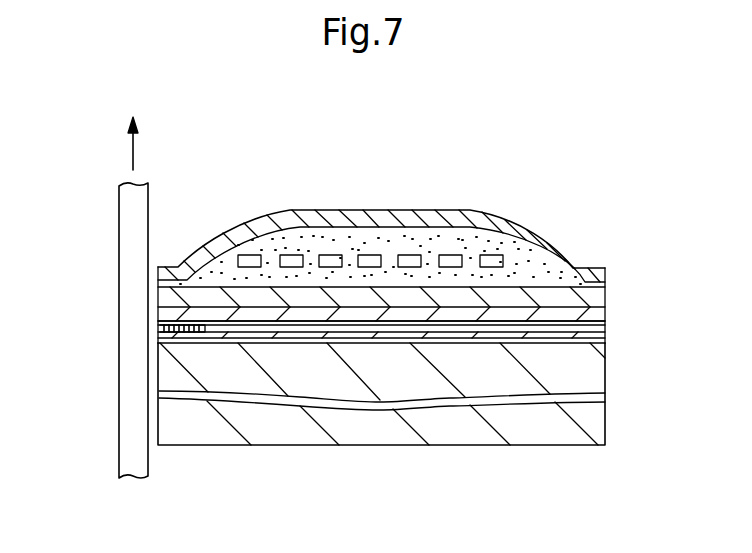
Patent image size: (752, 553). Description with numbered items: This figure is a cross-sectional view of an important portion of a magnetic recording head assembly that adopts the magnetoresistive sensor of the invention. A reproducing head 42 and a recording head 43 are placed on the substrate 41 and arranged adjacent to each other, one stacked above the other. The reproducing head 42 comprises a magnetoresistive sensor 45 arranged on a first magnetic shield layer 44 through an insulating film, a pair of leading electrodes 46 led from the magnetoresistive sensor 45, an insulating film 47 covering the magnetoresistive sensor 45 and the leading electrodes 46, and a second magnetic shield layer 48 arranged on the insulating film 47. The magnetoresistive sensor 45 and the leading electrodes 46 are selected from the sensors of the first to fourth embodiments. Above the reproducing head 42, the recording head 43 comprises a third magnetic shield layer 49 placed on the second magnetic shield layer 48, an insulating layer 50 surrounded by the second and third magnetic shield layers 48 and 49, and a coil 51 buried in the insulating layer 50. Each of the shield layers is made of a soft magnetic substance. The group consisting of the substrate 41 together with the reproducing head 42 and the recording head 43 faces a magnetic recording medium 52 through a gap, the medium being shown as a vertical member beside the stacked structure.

The substrate 41 is at (593, 382).
The reproducing head 42 is at (418, 384).
The recording head 43 is at (418, 213).
The first magnetic shield layer 44 is at (377, 335).
The magnetoresistive sensor 45 is at (183, 323).
The leading electrodes 46 is at (283, 316).
The insulating film 47 is at (507, 313).
The second magnetic shield layer 48 is at (580, 305).
The third magnetic shield layer 49 is at (535, 240).
The insulating layer 50 is at (312, 237).
The coil 51 is at (376, 256).
The magnetic recording medium 52 is at (127, 400).